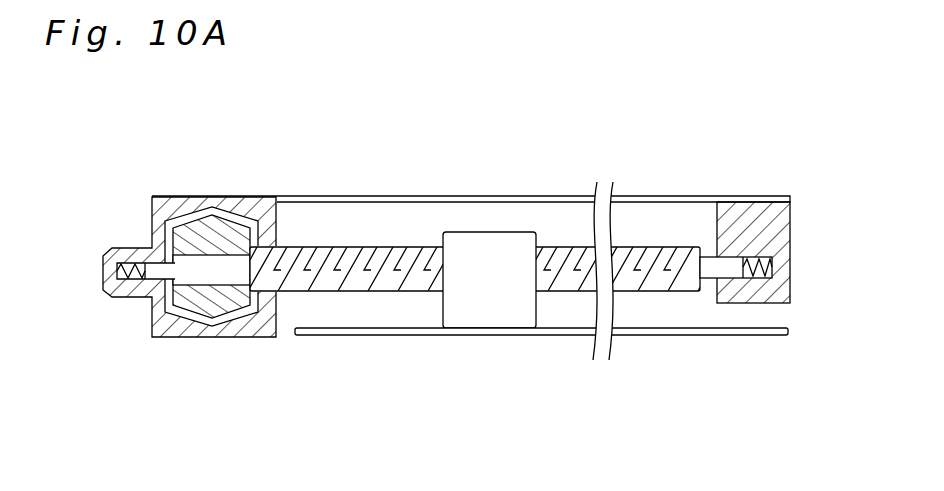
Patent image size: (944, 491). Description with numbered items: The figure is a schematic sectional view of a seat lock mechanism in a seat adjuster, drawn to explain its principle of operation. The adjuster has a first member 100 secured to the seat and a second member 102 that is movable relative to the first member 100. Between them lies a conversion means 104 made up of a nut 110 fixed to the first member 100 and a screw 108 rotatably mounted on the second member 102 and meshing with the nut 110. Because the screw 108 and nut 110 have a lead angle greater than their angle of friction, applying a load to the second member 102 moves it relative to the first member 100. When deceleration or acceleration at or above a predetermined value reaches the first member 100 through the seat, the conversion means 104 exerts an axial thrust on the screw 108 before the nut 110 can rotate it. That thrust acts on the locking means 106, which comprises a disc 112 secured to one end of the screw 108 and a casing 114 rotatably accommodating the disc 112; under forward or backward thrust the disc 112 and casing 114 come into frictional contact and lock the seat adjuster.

The first member 100 is at (378, 336).
The second member 102 is at (512, 197).
The conversion means 104 is at (540, 223).
The locking means 106 is at (222, 195).
The screw 108 is at (352, 250).
The nut 110 is at (470, 252).
The disc 112 is at (193, 322).
The casing 114 is at (258, 325).